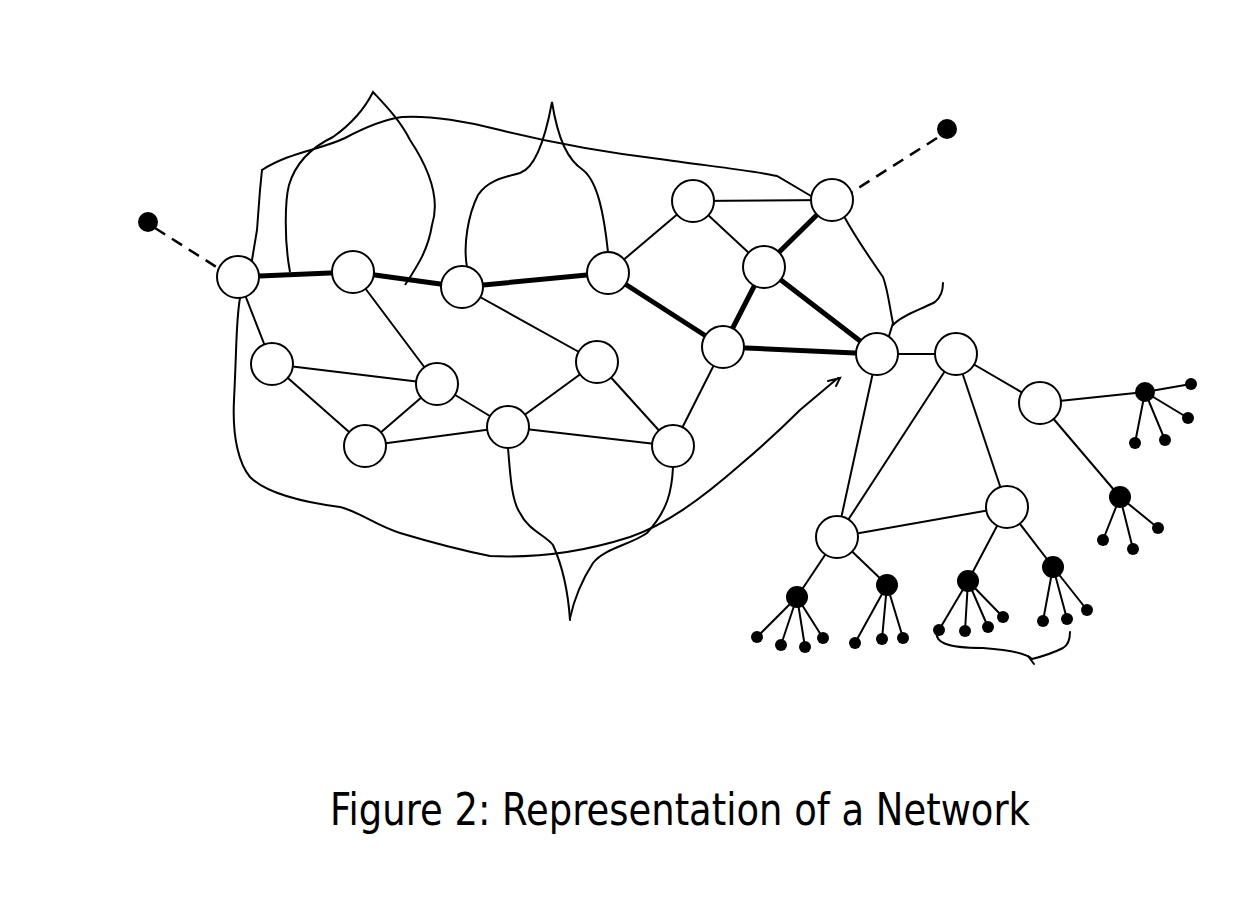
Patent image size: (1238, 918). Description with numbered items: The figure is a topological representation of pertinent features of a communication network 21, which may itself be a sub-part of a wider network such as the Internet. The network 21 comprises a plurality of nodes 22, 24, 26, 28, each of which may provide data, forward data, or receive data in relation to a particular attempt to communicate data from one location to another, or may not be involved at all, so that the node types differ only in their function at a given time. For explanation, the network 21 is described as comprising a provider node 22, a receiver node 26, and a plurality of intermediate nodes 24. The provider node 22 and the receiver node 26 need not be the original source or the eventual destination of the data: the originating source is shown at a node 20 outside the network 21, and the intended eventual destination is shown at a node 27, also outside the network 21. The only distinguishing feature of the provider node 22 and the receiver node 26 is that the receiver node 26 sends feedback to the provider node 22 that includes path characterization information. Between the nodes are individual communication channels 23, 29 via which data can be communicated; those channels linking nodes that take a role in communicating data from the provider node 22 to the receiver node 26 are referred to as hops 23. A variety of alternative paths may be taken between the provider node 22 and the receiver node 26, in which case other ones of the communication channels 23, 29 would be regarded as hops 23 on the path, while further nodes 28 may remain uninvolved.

The node 20 is at (147, 230).
The network 21 is at (360, 512).
The provider node 22 is at (229, 258).
The hops 23 is at (373, 92).
The intermediate nodes 24 is at (552, 102).
The receiver node 26 is at (843, 183).
The node 27 is at (955, 120).
The nodes 28 is at (943, 283).
The communication channels 29 is at (1000, 365).